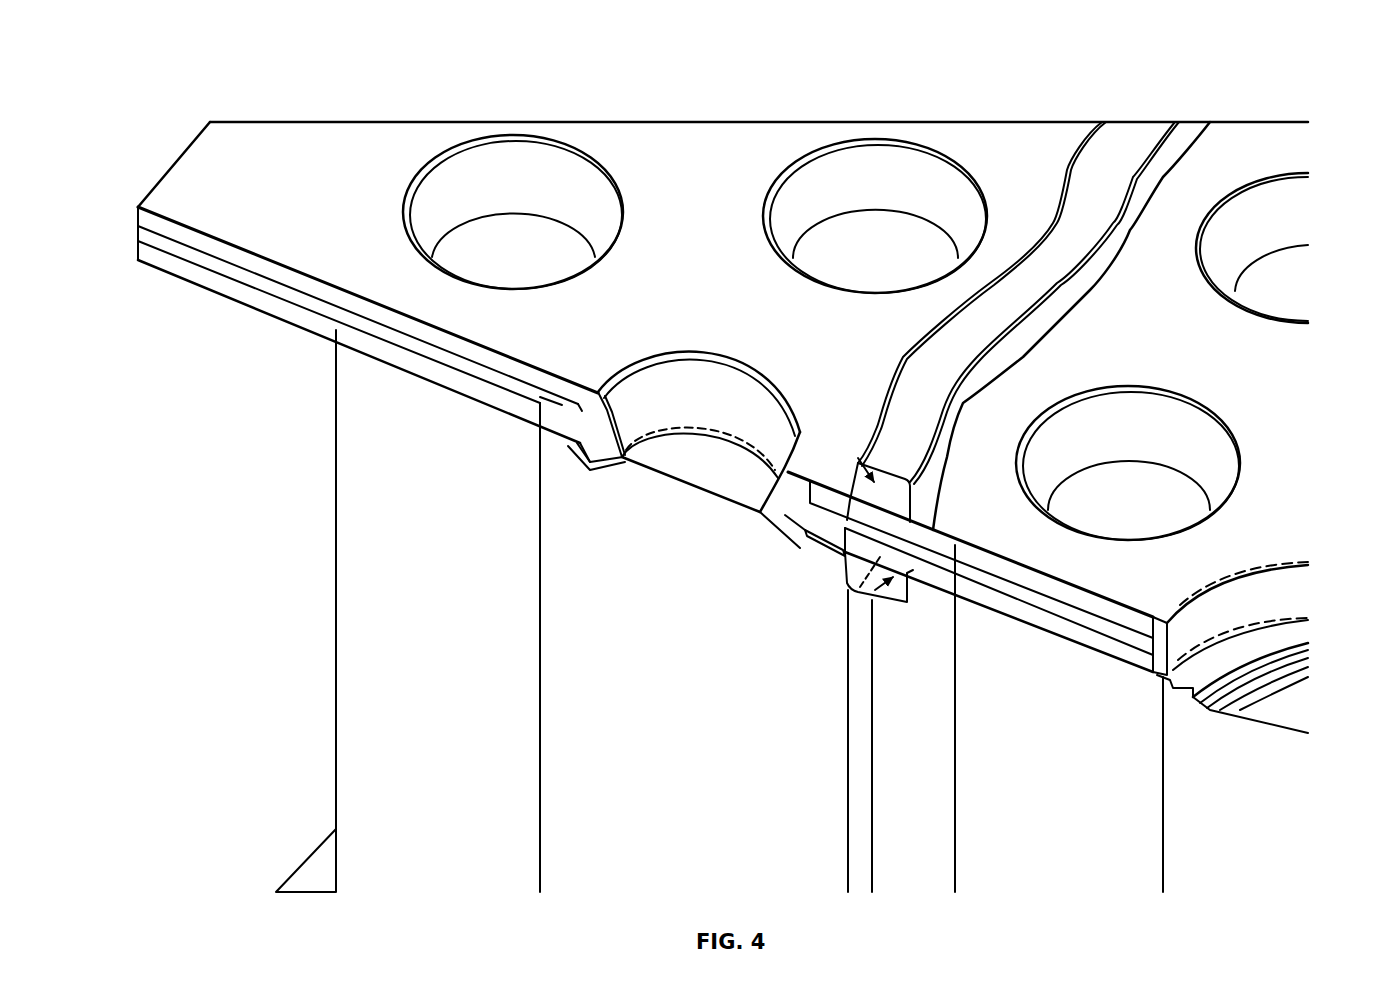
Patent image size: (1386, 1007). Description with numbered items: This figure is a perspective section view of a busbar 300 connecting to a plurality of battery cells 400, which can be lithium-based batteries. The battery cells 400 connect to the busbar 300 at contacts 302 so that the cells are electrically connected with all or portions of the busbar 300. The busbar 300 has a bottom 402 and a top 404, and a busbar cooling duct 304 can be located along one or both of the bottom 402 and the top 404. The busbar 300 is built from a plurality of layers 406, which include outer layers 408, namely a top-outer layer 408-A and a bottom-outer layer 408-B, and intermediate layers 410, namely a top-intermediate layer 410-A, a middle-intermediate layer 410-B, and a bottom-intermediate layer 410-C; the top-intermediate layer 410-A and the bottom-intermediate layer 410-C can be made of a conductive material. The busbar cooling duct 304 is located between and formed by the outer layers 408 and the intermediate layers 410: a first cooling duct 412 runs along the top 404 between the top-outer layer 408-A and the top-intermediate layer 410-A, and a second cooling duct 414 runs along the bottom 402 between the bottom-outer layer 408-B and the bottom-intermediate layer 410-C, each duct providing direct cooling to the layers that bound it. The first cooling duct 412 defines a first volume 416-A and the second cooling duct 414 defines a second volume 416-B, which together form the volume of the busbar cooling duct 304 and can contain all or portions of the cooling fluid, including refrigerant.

The busbar 300 is at (998, 104).
The contacts 302 is at (540, 235).
The busbar cooling duct 304 is at (845, 553).
The battery cells 400 is at (336, 557).
The bottom 402 is at (207, 302).
The top 404 is at (249, 183).
The layers 406 is at (118, 228).
The outer layers 408 is at (952, 594).
The top-outer layer 408-A is at (280, 260).
The bottom-outer layer 408-B is at (288, 322).
The intermediate layers 410 is at (1087, 633).
The top-intermediate layer 410-A is at (450, 348).
The middle-intermediate layer 410-B is at (513, 388).
The bottom-intermediate layer 410-C is at (472, 385).
The first cooling duct 412 is at (917, 494).
The second cooling duct 414 is at (847, 583).
The first volume 416-A is at (858, 458).
The second volume 416-B is at (875, 590).